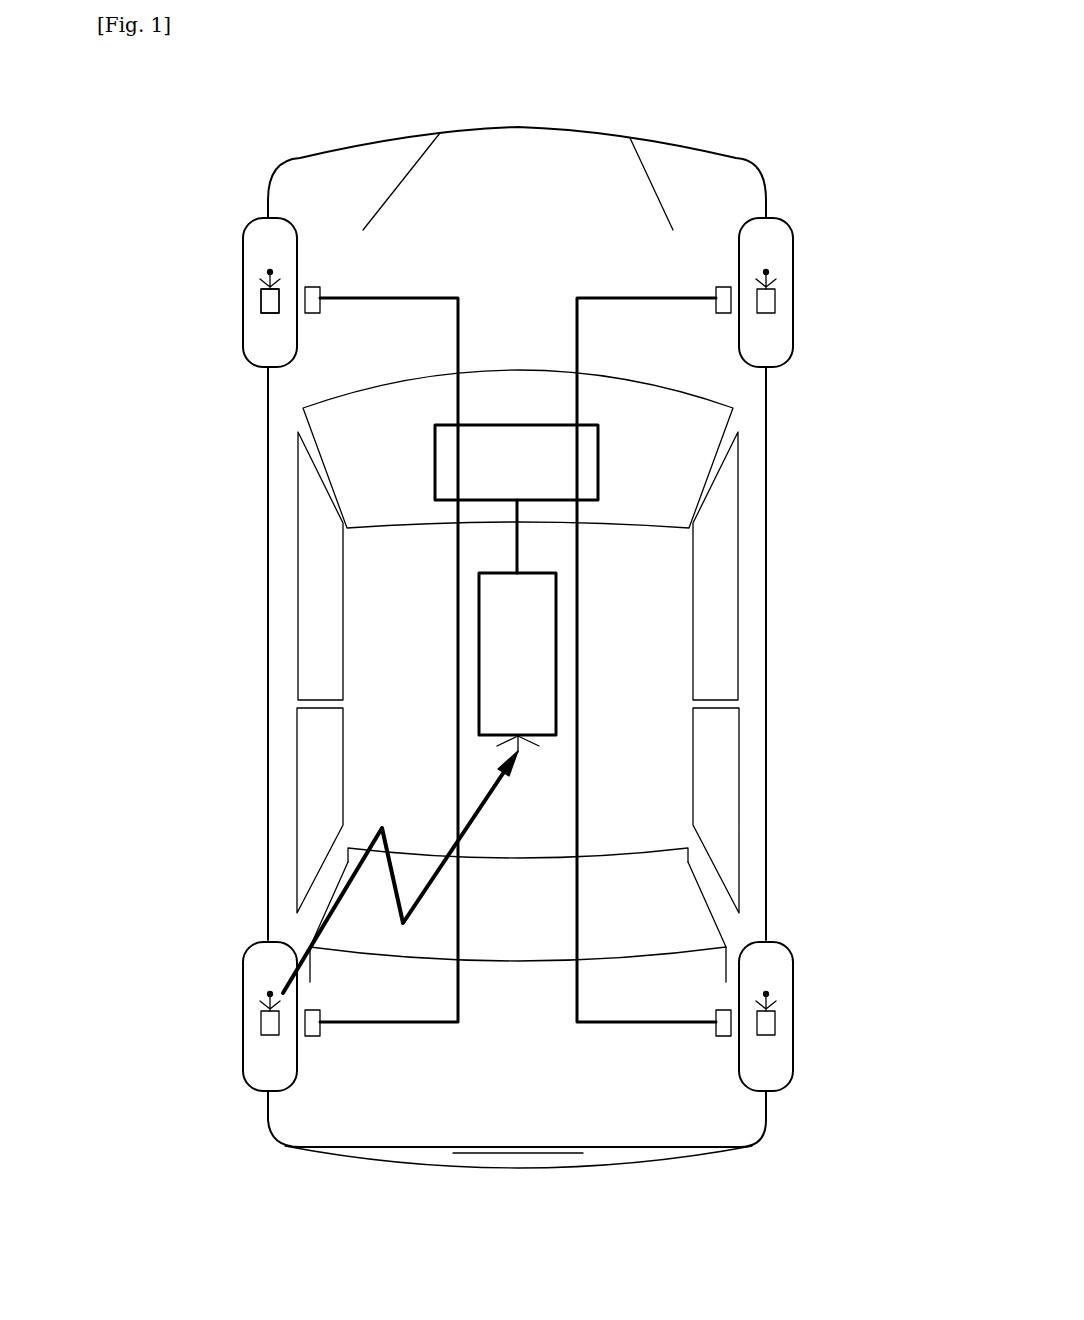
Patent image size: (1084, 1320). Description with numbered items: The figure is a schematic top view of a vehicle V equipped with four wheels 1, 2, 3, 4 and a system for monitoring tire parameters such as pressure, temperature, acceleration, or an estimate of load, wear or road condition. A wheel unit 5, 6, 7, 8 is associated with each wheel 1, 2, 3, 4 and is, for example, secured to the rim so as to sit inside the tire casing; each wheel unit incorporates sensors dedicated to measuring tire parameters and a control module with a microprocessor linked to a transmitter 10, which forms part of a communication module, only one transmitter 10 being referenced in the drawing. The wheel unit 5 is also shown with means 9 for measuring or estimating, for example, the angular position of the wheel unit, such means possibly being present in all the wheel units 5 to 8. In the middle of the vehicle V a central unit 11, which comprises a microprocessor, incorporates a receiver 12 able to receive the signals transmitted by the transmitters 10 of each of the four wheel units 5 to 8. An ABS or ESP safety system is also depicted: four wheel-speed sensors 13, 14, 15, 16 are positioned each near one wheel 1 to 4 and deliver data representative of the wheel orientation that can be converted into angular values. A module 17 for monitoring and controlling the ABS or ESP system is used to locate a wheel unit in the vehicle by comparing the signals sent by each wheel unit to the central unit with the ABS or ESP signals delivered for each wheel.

The wheel 1 is at (204, 302).
The wheel 2 is at (820, 307).
The wheel 3 is at (216, 1028).
The wheel 4 is at (819, 1029).
The wheel unit 5 is at (264, 312).
The wheel unit 6 is at (776, 308).
The wheel unit 7 is at (262, 1036).
The wheel unit 8 is at (774, 1036).
The means for measuring or estimating angular position 9 is at (266, 325).
The transmitter 10 is at (268, 273).
The central unit 11 is at (493, 700).
The receiver 12 is at (517, 753).
The wheel-speed sensor 13 is at (313, 287).
The wheel-speed sensor 14 is at (723, 287).
The wheel-speed sensor 15 is at (313, 1036).
The wheel-speed sensor 16 is at (723, 1036).
The module for monitoring/controlling the ABS or ESP system 17 is at (543, 470).
The vehicle V is at (748, 572).